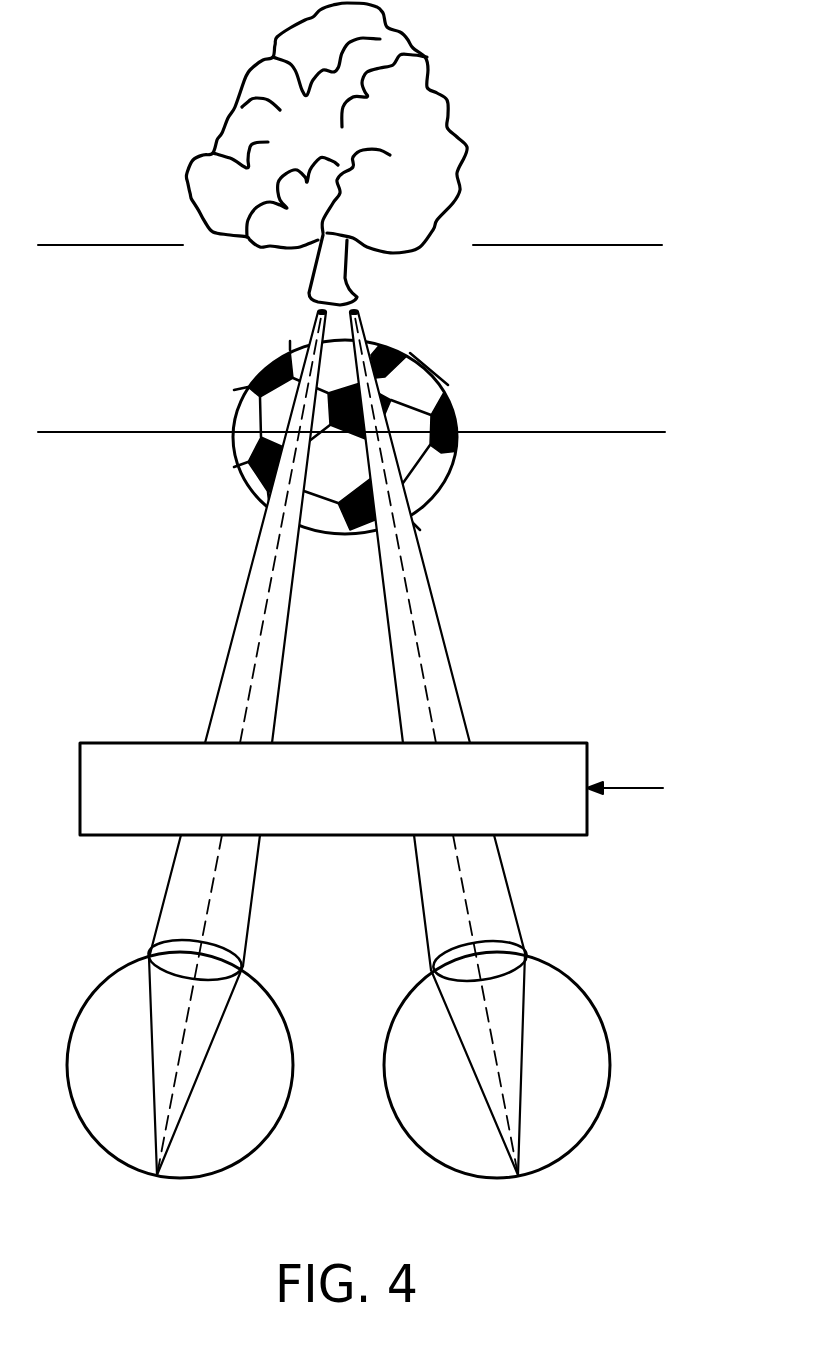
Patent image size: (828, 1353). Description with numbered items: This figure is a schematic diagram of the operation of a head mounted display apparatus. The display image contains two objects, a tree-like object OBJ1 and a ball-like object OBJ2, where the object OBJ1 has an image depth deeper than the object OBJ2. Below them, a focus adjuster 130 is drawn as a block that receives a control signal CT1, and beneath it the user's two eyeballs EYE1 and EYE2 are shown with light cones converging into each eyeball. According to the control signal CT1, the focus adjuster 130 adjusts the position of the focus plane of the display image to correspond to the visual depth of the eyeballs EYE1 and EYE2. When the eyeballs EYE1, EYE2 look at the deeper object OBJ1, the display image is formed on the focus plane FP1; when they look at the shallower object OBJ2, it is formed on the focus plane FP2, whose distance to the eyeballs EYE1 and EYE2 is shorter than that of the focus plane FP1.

The object OBJ1 is at (468, 150).
The object OBJ2 is at (440, 376).
The focus plane FP1 is at (618, 245).
The focus plane FP2 is at (623, 432).
The focus adjuster 130 is at (537, 743).
The control signal CT1 is at (647, 789).
The eyeball EYE1 is at (180, 1029).
The eyeball EYE2 is at (497, 1029).